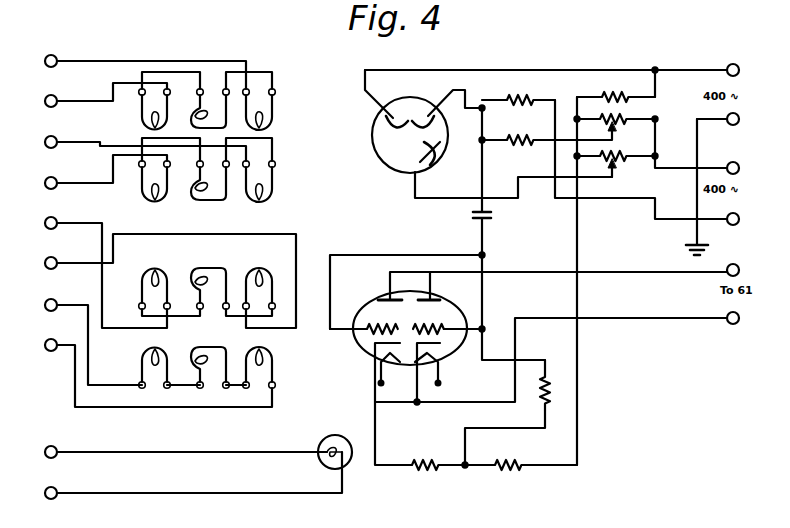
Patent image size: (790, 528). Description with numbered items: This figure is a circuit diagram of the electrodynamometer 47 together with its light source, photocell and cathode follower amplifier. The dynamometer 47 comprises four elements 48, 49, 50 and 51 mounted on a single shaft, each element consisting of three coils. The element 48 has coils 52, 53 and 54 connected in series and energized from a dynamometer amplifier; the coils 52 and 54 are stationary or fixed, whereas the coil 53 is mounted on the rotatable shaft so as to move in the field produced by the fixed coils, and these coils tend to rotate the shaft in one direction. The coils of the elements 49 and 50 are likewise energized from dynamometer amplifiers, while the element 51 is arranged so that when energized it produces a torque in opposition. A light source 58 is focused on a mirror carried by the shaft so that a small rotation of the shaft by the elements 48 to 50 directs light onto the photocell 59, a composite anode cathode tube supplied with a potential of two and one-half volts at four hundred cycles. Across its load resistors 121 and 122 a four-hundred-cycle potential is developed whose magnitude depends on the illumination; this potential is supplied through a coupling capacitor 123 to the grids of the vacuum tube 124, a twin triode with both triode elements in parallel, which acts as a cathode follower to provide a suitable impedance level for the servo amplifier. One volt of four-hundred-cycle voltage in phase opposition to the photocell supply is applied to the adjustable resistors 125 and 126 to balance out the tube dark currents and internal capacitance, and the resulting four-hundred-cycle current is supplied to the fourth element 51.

The electrodynamometer 47 is at (189, 311).
The element 48 is at (182, 131).
The element 49 is at (277, 193).
The element 50 is at (284, 272).
The element 51 is at (276, 357).
The coil 52 is at (148, 110).
The coil 53 is at (197, 112).
The coil 54 is at (270, 111).
The light source 58 is at (353, 426).
The photocell 59 is at (383, 158).
The resistor 121 is at (518, 107).
The resistor 122 is at (527, 134).
The coupling capacitor 123 is at (472, 221).
The vacuum tube 124 is at (365, 347).
The adjustable resistor 125 is at (628, 122).
The adjustable resistor 126 is at (618, 170).